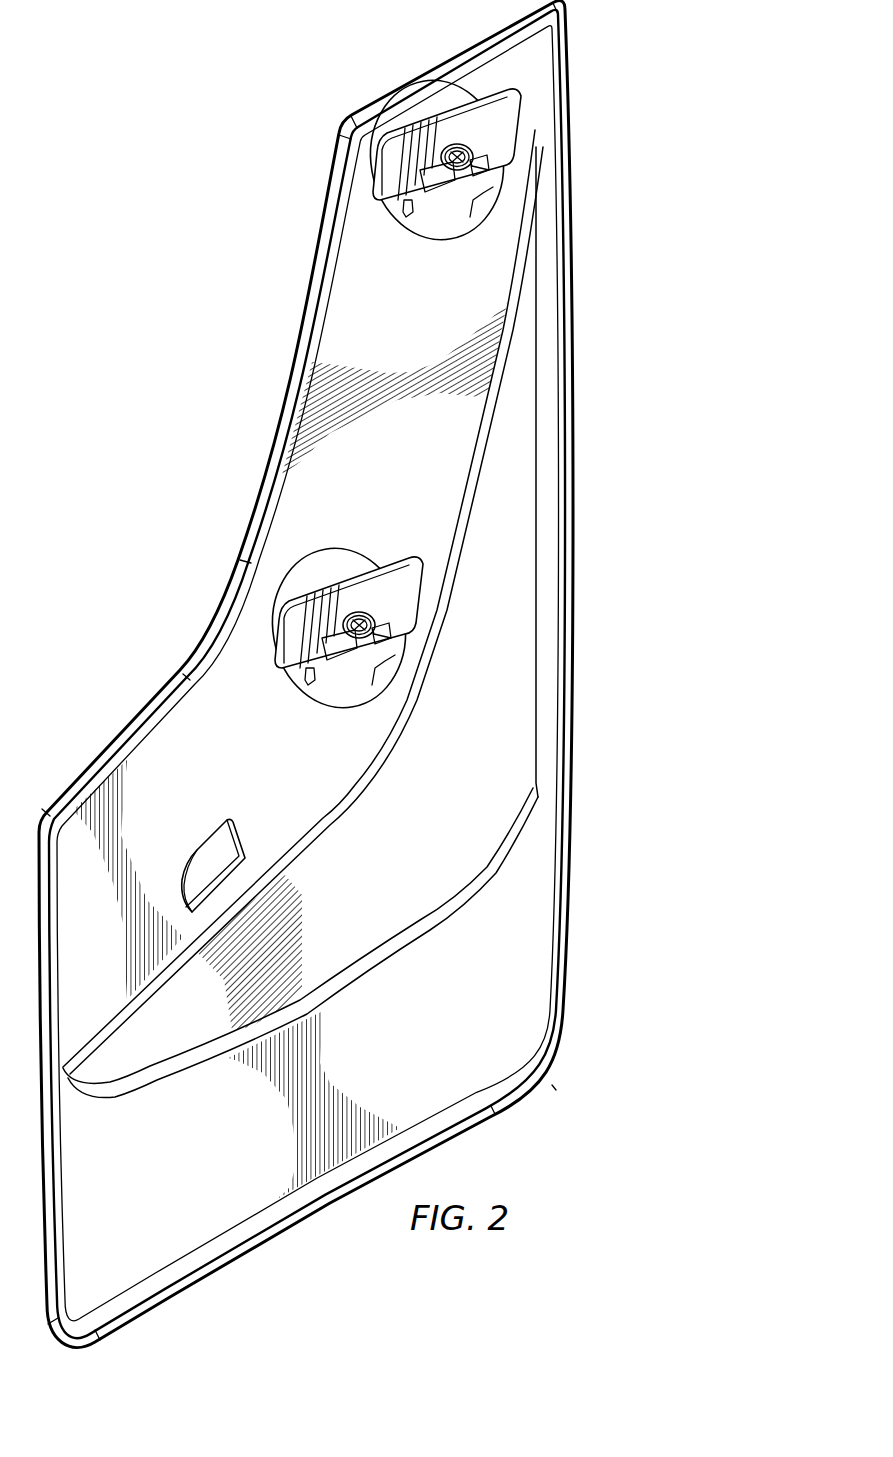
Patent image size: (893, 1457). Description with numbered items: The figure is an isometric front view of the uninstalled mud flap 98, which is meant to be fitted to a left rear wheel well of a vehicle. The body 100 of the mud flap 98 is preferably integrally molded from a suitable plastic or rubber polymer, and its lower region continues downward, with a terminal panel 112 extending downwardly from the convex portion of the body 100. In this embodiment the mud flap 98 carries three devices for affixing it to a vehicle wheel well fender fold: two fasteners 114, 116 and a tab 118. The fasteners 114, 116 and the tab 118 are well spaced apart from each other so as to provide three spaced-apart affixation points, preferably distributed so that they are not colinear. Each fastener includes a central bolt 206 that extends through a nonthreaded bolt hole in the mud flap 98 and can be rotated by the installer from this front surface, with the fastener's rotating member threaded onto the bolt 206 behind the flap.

The mud flap 98 is at (225, 403).
The body 100 is at (248, 518).
The terminal panel 112 is at (200, 1222).
The fastener 114 is at (433, 252).
The fastener 116 is at (289, 708).
The tab 118 is at (203, 836).
The bolt 206 is at (478, 108).